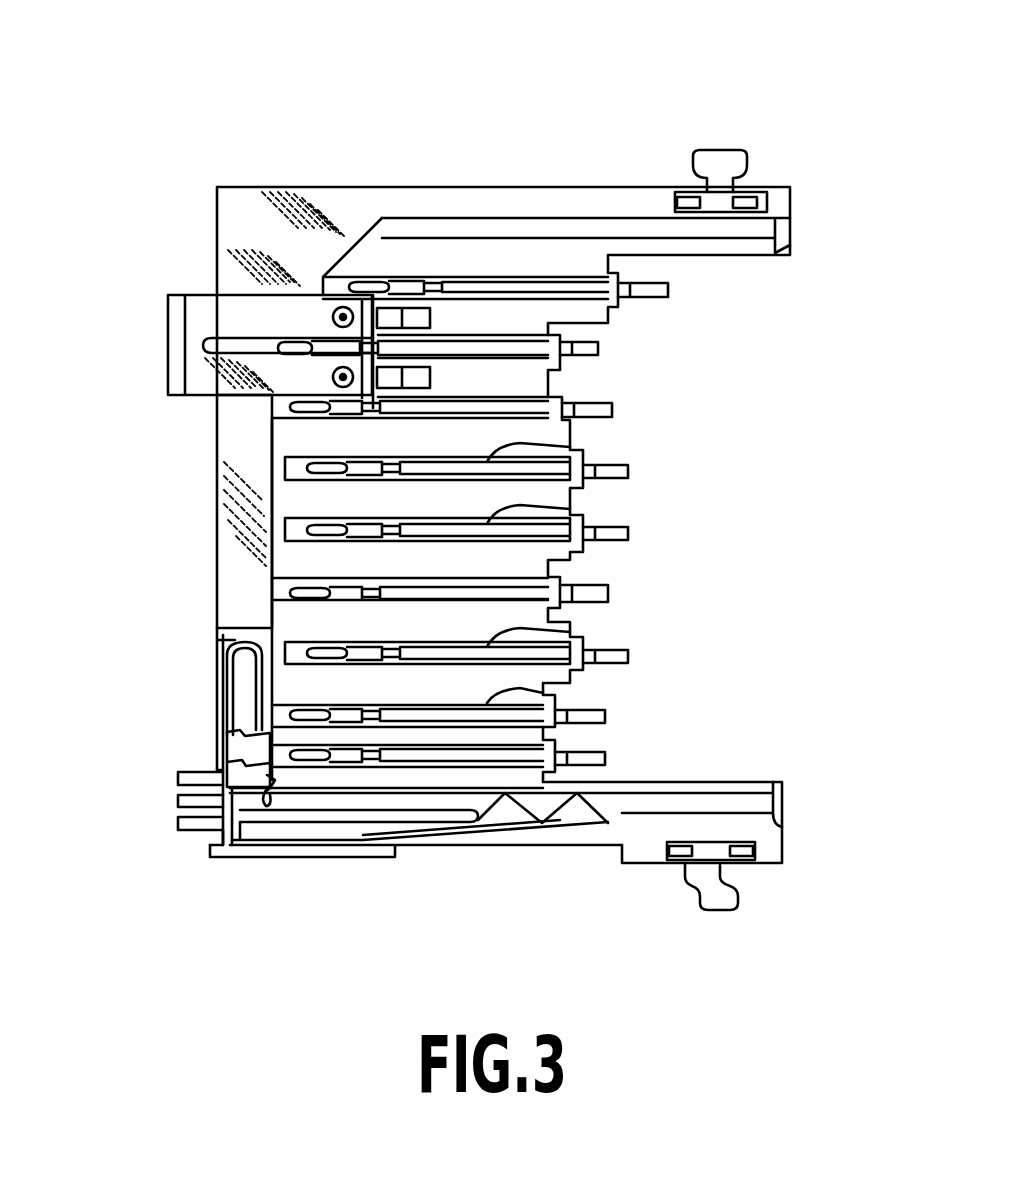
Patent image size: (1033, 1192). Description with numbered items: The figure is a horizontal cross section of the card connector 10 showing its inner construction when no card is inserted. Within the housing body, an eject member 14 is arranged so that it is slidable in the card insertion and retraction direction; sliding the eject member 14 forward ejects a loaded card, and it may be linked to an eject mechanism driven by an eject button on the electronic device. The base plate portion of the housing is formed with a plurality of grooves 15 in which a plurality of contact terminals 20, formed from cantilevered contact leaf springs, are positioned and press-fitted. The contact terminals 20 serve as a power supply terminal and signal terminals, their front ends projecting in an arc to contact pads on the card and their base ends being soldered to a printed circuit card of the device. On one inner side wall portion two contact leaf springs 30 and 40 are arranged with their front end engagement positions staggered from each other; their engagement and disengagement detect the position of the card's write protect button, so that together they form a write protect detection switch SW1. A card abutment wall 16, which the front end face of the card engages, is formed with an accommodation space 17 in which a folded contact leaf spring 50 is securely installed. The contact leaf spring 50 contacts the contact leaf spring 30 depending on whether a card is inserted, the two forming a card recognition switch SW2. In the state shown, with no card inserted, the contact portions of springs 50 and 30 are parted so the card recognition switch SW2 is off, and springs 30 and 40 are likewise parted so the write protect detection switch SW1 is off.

The connector 10 is at (631, 135).
The eject member 14 is at (205, 296).
The grooves 15 is at (487, 455).
The card abutment wall 16 is at (270, 497).
The accommodation space 17 is at (215, 633).
The contact terminals 20 is at (487, 517).
The contact leaf spring 30 is at (350, 822).
The contact leaf spring 40 is at (472, 837).
The folded contact leaf spring 50 is at (222, 684).
The write protect detection switch SW1 is at (300, 862).
The card recognition switch SW2 is at (192, 750).